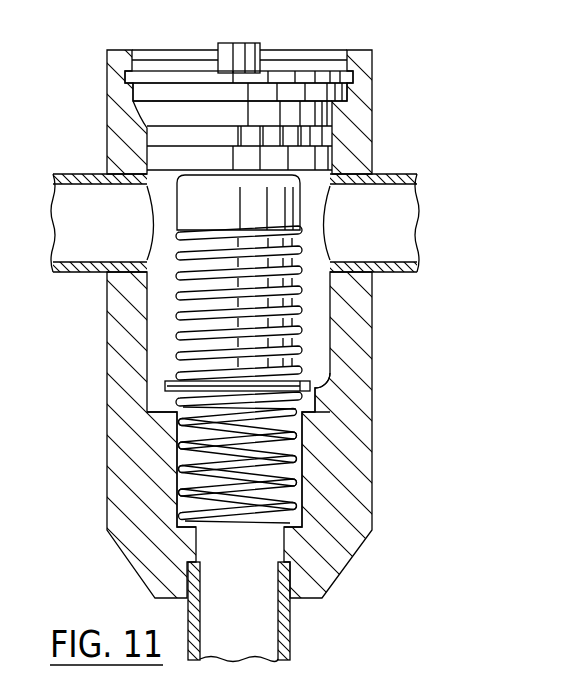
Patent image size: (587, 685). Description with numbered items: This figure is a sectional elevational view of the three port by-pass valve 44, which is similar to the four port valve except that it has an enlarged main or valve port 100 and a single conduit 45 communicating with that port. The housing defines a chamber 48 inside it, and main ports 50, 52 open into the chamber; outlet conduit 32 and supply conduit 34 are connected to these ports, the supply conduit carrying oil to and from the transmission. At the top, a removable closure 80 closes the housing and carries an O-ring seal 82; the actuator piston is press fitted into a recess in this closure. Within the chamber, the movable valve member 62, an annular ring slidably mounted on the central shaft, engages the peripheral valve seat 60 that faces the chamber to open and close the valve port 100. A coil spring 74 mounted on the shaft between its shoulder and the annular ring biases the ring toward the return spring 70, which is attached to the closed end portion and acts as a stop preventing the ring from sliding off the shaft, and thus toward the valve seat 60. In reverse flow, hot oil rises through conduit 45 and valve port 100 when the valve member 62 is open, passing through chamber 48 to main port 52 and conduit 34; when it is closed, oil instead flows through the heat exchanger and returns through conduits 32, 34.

The three port by-pass valve 44 is at (432, 57).
The outlet conduit 32 is at (83, 172).
The supply conduit 34 is at (413, 174).
The single conduit 45 is at (288, 632).
The removable closure 80 is at (303, 111).
The O-ring seal 82 is at (333, 121).
The main port 50 is at (130, 227).
The main port 52 is at (335, 235).
The chamber 48 is at (158, 340).
The coil spring 74 is at (180, 294).
The valve member 62 is at (166, 387).
The valve seat 60 is at (328, 374).
The return spring 70 is at (177, 470).
The valve port 100 is at (288, 471).